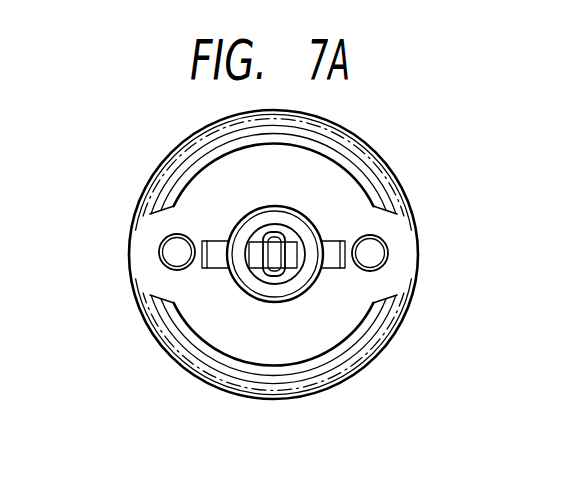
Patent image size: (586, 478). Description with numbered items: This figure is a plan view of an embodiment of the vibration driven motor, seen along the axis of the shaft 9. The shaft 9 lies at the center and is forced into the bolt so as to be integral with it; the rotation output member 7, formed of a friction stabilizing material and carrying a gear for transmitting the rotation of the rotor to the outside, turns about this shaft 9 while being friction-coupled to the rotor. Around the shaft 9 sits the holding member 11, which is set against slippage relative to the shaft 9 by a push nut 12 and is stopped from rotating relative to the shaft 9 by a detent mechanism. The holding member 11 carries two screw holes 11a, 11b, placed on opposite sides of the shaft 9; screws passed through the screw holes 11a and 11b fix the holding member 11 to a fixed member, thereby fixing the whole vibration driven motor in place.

The rotation output member 7 is at (395, 183).
The shaft 9 is at (275, 283).
The holding member 11 is at (335, 175).
The screw hole 11a is at (372, 252).
The screw hole 11b is at (175, 251).
The push nut 12 is at (302, 283).